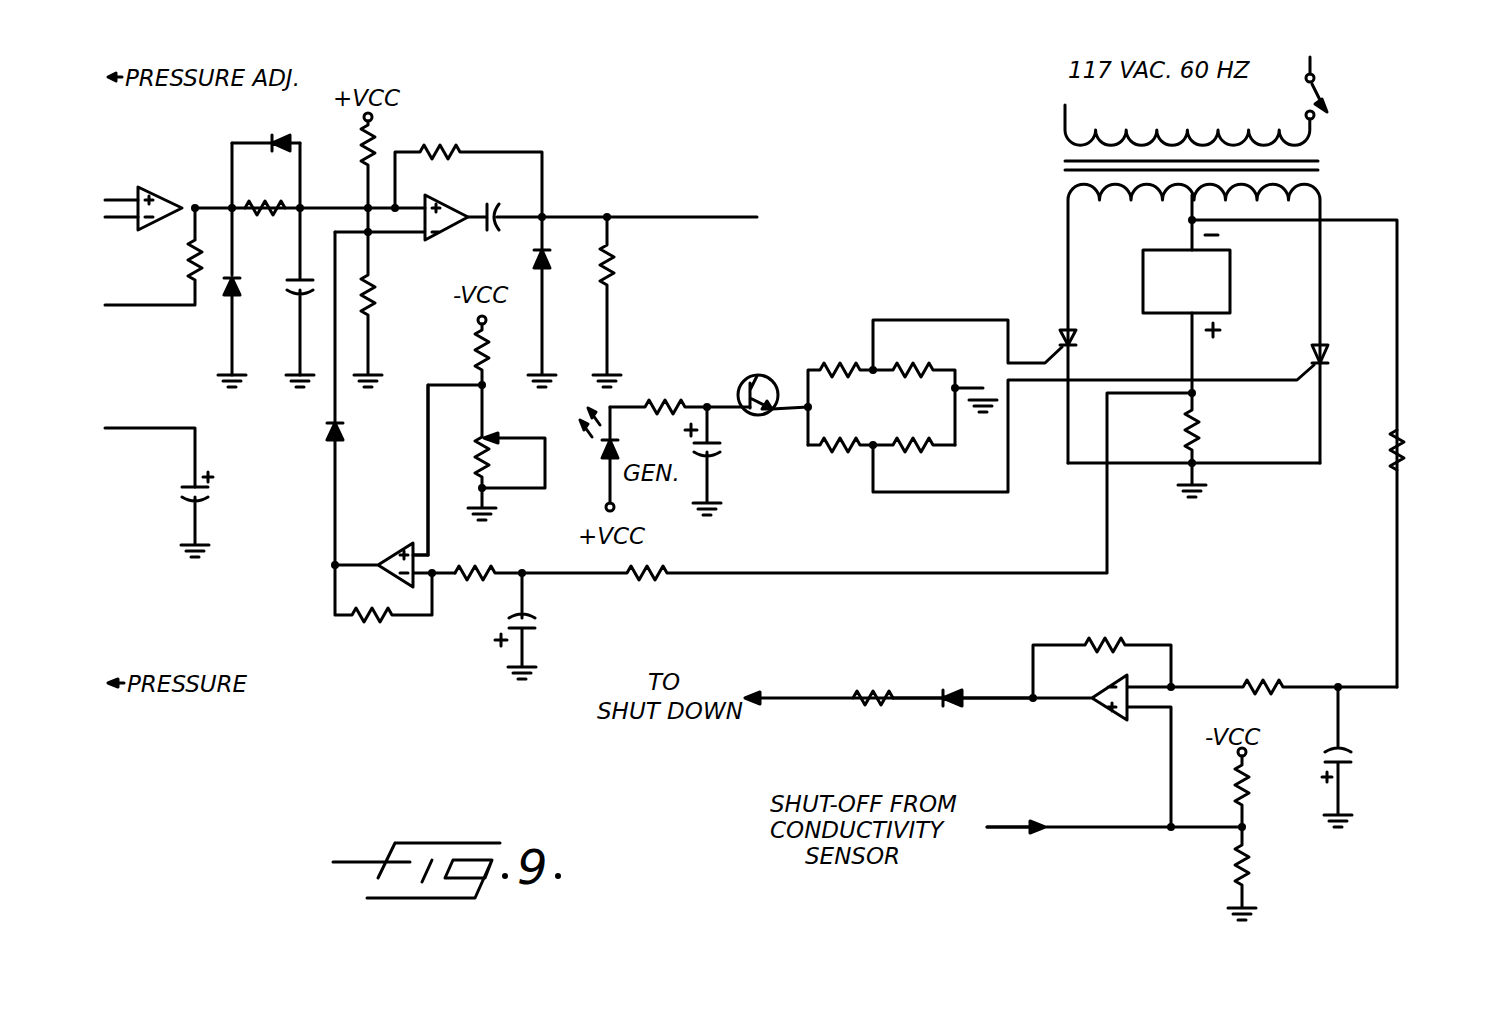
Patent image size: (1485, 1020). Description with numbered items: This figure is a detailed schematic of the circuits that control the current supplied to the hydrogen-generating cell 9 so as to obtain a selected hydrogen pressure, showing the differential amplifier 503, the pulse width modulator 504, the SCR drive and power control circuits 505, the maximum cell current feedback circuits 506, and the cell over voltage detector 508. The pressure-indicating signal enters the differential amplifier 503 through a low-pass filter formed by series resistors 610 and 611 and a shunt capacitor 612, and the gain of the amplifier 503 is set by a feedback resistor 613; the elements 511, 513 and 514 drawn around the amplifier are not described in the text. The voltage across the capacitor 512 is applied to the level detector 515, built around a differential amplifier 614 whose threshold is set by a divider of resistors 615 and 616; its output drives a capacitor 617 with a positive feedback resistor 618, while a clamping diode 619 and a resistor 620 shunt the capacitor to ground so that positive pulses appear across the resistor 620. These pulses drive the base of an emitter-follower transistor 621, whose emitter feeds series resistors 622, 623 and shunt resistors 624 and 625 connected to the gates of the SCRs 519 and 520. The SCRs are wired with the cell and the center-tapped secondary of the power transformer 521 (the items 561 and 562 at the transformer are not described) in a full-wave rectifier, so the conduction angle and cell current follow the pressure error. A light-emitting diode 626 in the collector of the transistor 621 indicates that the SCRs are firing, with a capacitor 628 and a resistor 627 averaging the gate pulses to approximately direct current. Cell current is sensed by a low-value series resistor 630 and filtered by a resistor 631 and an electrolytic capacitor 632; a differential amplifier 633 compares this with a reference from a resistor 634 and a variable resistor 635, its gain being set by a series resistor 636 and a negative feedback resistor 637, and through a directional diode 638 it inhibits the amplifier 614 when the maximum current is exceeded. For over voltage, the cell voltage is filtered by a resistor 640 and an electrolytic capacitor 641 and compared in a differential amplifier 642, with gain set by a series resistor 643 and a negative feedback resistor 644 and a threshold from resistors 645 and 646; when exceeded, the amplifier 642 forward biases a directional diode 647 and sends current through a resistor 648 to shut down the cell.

The H2 cell 9 is at (1232, 258).
The differential amplifier 503 is at (196, 172).
The pulse width modulator 504 is at (171, 131).
The SCR drive and power control circuits 505 is at (892, 235).
The maximum cell current feedback circuits 506 is at (448, 676).
The cell over voltage detector 508 is at (1222, 618).
The resistor 511 is at (283, 202).
The capacitor 512 is at (302, 292).
The diode 513 is at (280, 264).
The diode 514 is at (280, 135).
The level detector 515 is at (413, 326).
The SCR 519 is at (1078, 340).
The SCR 520 is at (1328, 350).
The power transformer 521 is at (1332, 153).
The transformer secondary 561 is at (1325, 187).
The switch 562 is at (1322, 88).
The series resistor 610 is at (155, 470).
The series resistor 611 is at (213, 372).
The shunt capacitor 612 is at (210, 492).
The feedback resistor 613 is at (188, 262).
The differential amplifier 614 is at (436, 200).
The resistor 615 is at (372, 145).
The resistor 616 is at (372, 285).
The capacitor 617 is at (492, 240).
The positive feedback resistor 618 is at (450, 148).
The clamping diode 619 is at (552, 258).
The resistor 620 is at (612, 262).
The transistor 621 is at (752, 376).
The series resistor 622 is at (840, 345).
The series resistor 623 is at (833, 448).
The shunt resistor 624 is at (905, 368).
The shunt resistor 625 is at (900, 452).
The light-emitting diode 626 is at (605, 468).
The resistor 627 is at (693, 375).
The capacitor 628 is at (712, 455).
The series resistor 630 is at (1200, 432).
The resistor 631 is at (662, 582).
The electrolytic capacitor 632 is at (532, 630).
The differential amplifier 633 is at (398, 532).
The resistor 634 is at (487, 348).
The variable resistor 635 is at (488, 437).
The series resistor 636 is at (498, 582).
The negative feedback resistor 637 is at (375, 622).
The directional diode 638 is at (330, 438).
The resistor 640 is at (1405, 448).
The electrolytic capacitor 641 is at (1352, 752).
The differential amplifier 642 is at (1115, 718).
The series resistor 643 is at (1258, 682).
The negative feedback resistor 644 is at (1088, 640).
The resistor 645 is at (1250, 787).
The resistor 646 is at (1255, 870).
The directional diode 647 is at (978, 672).
The resistor 648 is at (898, 672).